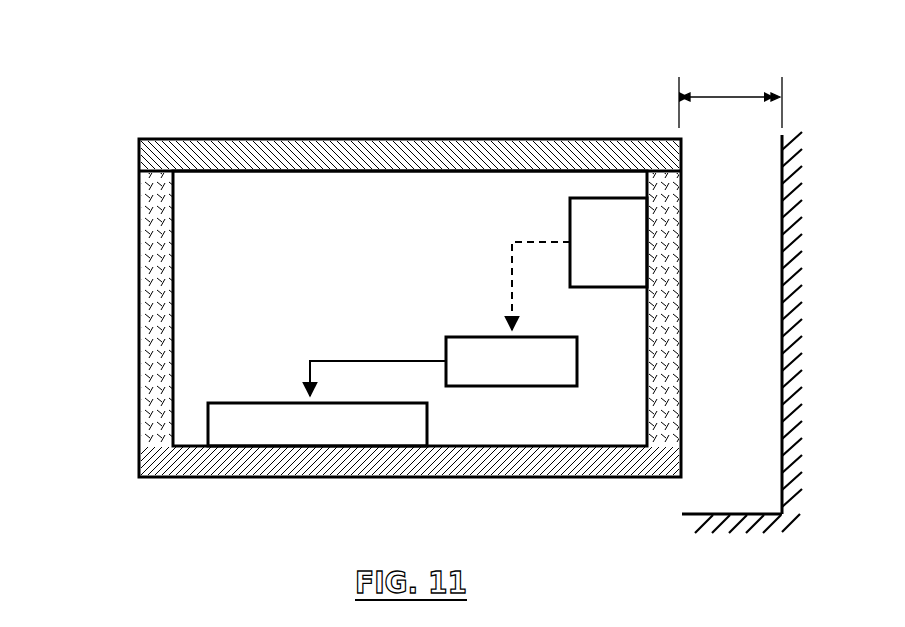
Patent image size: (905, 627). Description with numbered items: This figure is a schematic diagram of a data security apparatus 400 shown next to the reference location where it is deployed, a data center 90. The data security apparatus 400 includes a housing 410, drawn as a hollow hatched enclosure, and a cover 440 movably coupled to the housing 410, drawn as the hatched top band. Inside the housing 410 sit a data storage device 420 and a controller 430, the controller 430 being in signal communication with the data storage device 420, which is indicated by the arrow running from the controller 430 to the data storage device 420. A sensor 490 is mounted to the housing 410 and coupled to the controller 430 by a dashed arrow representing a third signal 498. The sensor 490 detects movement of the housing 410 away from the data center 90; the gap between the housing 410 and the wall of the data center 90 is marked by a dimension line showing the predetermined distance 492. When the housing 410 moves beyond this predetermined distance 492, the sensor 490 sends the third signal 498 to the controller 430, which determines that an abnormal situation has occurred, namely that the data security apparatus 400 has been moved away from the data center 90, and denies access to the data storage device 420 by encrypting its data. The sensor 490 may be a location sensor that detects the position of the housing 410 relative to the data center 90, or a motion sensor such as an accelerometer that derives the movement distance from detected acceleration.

The data security apparatus 400 is at (266, 89).
The housing 410 is at (137, 432).
The data storage device 420 is at (227, 417).
The controller 430 is at (475, 357).
The cover 440 is at (157, 138).
The sensor 490 is at (603, 228).
The predetermined distance 492 is at (727, 93).
The third signal 498 is at (537, 242).
The data center 90 is at (788, 165).